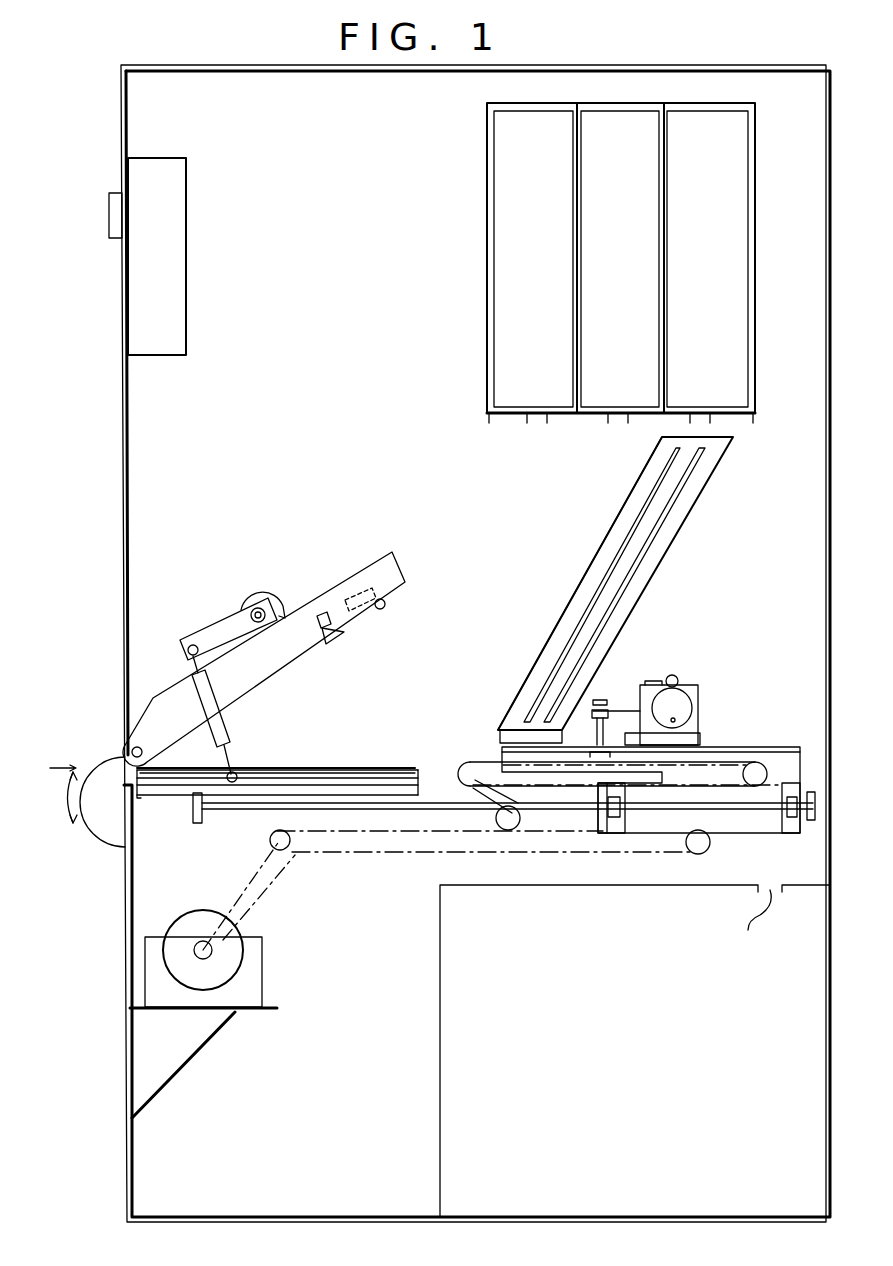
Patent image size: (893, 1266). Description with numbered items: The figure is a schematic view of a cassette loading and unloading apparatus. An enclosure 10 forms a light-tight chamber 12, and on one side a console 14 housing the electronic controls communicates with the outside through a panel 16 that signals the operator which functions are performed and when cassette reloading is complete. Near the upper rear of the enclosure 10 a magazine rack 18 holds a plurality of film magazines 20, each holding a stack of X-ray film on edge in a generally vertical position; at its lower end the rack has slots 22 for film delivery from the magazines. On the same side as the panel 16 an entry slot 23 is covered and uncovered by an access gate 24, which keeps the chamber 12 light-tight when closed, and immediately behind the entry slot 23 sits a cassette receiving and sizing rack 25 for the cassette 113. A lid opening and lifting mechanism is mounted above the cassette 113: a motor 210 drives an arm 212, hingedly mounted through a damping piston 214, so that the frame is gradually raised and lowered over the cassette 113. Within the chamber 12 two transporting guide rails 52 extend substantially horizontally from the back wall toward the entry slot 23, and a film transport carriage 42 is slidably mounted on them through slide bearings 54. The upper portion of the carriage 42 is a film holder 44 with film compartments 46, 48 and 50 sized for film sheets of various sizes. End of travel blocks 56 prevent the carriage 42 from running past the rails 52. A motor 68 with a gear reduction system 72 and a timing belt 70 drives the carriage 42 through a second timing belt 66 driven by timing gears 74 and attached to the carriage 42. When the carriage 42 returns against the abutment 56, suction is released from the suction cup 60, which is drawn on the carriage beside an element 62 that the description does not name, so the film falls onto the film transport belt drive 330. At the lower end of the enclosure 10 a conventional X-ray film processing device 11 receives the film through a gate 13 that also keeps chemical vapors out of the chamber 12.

The enclosure 10 is at (648, 65).
The X-ray film processing device 11 is at (590, 954).
The light-tight chamber 12 is at (360, 351).
The gate 13 is at (748, 924).
The console 14 is at (186, 232).
The panel 16 is at (109, 205).
The magazine rack 18 is at (488, 226).
The film magazines 20 is at (511, 116).
The slots 22 is at (536, 424).
The entry slot 23 is at (118, 768).
The access gate 24 is at (87, 768).
The cassette receiving and sizing rack 25 is at (177, 795).
The film transport carriage 42 is at (777, 760).
The film holder 44 is at (623, 590).
The film compartment 46 is at (591, 575).
The film compartment 48 is at (632, 554).
The film compartment 50 is at (690, 502).
The transporting guide rails 52 is at (242, 810).
The slide bearings 54 is at (615, 820).
The end of travel blocks 56 is at (198, 824).
The suction cup 60 is at (613, 737).
The drive motor 62 is at (673, 688).
The second timing belt 66 is at (427, 852).
The motor 68 is at (262, 973).
The timing belt 70 is at (253, 902).
The gear reduction system 72 is at (198, 945).
The timing gears 74 is at (290, 848).
The cassette 113 is at (397, 770).
The motor 210 is at (273, 594).
The arm 212 is at (220, 623).
The damping piston 214 is at (225, 722).
The film transport belt drive 330 is at (718, 765).